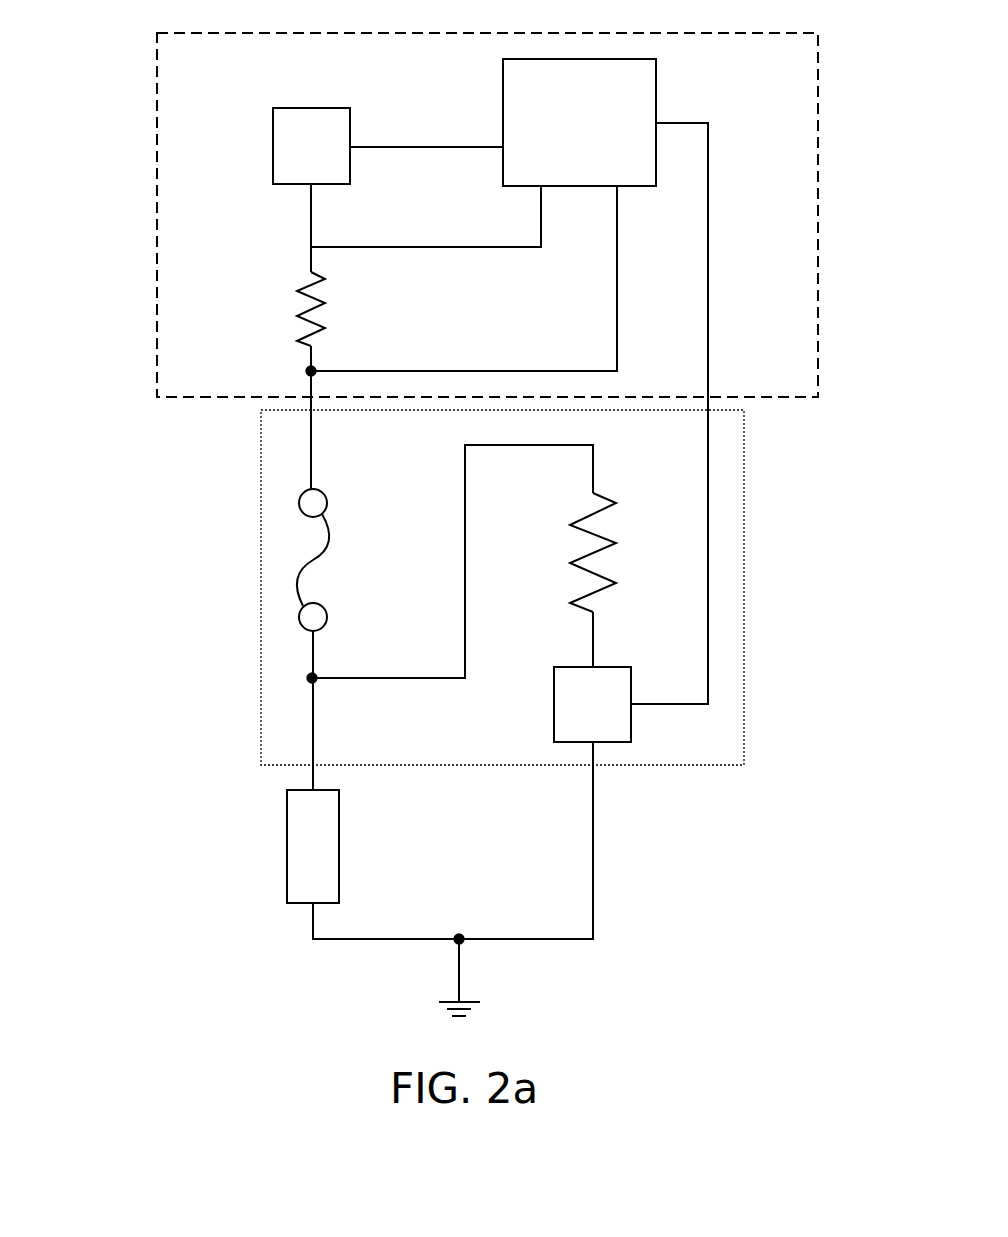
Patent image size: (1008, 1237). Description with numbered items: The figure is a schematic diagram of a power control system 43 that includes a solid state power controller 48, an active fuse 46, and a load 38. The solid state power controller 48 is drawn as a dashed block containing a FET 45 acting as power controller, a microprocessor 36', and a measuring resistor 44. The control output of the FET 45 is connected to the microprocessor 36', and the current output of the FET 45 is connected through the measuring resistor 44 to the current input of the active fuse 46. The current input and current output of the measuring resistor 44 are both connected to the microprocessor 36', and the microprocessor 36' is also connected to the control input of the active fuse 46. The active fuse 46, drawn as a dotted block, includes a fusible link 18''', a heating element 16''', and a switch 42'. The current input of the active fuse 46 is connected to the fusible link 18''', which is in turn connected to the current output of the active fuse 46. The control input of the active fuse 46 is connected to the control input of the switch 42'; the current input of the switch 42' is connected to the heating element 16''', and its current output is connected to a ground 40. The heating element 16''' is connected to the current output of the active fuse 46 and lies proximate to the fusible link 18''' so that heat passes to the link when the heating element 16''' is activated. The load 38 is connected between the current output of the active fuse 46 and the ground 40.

The solid state power controller 48 is at (818, 298).
The active fuse 46 is at (745, 621).
The power control system 43 is at (182, 532).
The FET 45 is at (298, 146).
The microprocessor 36' is at (579, 122).
The measuring resistor 44 is at (331, 309).
The fusible link 18''' is at (335, 560).
The heating element 16''' is at (614, 552).
The switch 42' is at (592, 704).
The load 38 is at (300, 863).
The ground 40 is at (478, 985).